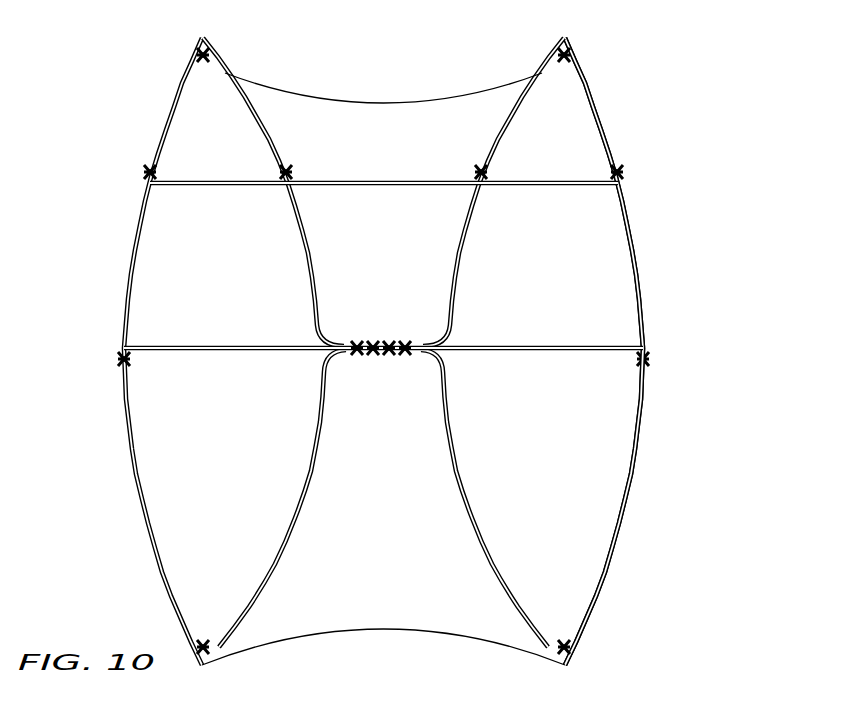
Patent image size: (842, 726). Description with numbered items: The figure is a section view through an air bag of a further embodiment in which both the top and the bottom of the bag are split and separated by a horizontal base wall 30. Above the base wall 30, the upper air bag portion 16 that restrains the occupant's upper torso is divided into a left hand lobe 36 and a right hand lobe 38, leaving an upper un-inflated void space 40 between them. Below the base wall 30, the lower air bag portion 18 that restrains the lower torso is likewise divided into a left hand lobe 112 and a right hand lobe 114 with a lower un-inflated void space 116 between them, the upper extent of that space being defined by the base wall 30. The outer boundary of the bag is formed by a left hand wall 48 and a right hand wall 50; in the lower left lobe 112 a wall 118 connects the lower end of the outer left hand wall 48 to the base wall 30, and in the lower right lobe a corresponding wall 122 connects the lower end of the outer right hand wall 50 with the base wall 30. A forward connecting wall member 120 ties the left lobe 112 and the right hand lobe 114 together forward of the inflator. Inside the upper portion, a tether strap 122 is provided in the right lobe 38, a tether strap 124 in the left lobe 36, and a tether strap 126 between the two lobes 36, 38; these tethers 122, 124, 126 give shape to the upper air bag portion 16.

The upper air bag portion 16 is at (645, 124).
The lower air bag portion 18 is at (641, 524).
The base wall 30 is at (383, 342).
The left hand lobe 36 is at (181, 75).
The right hand lobe 38 is at (587, 70).
The upper un-inflated void space 40 is at (395, 138).
The left hand wall 48 is at (128, 437).
The right hand wall 50 is at (637, 448).
The left hand lobe 112 is at (167, 532).
The right hand lobe 114 is at (572, 552).
The lower un-inflated void space 116 is at (406, 565).
The wall 118 is at (260, 599).
The forward connecting wall member 120 is at (430, 99).
The tether strap 122 is at (543, 183).
The tether strap 124 is at (213, 183).
The tether strap 126 is at (320, 183).